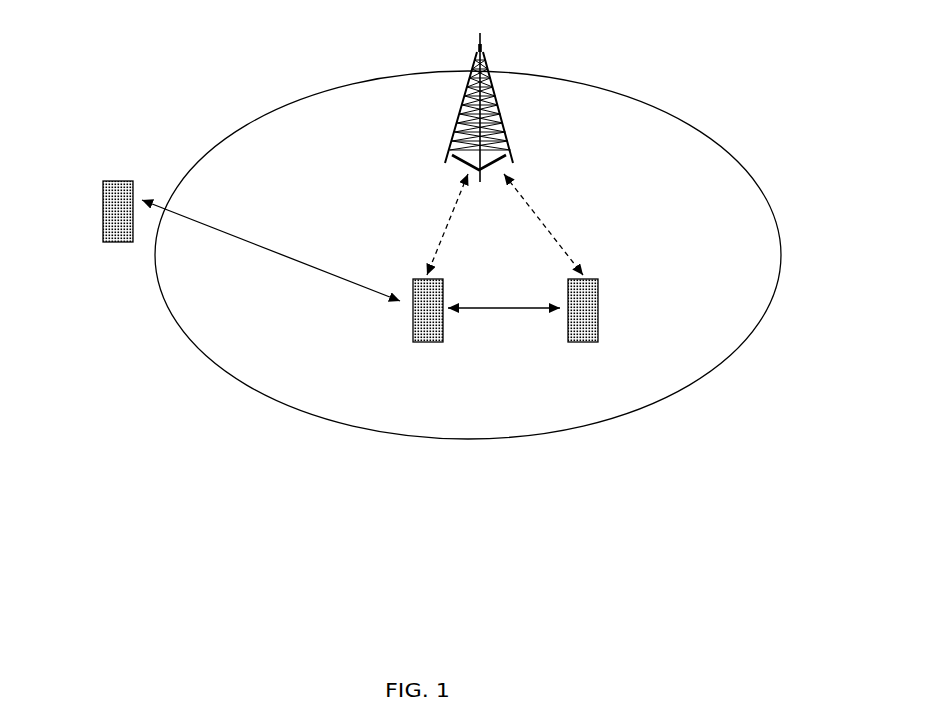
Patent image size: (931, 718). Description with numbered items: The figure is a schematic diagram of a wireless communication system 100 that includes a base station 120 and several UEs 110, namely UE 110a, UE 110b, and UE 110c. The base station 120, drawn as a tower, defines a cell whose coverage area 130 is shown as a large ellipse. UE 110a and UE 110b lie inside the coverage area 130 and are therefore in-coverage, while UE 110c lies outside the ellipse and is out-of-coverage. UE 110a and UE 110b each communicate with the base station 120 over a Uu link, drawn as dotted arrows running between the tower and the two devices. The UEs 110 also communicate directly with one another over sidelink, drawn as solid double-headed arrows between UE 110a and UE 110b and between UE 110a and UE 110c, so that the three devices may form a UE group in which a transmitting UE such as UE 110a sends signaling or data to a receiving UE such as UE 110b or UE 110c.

The wireless communication system 100 is at (409, 225).
The coverage area 130 is at (237, 128).
The base station 120 is at (452, 140).
The UEs 110 is at (630, 339).
The UE 110a is at (426, 344).
The UE 110b is at (587, 344).
The UE 110c is at (125, 244).